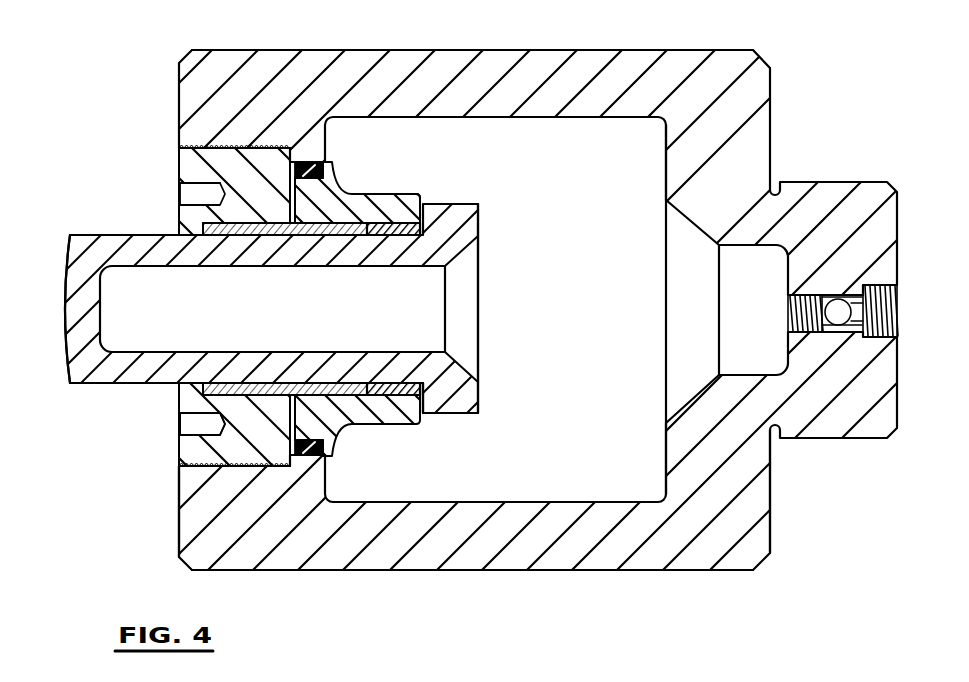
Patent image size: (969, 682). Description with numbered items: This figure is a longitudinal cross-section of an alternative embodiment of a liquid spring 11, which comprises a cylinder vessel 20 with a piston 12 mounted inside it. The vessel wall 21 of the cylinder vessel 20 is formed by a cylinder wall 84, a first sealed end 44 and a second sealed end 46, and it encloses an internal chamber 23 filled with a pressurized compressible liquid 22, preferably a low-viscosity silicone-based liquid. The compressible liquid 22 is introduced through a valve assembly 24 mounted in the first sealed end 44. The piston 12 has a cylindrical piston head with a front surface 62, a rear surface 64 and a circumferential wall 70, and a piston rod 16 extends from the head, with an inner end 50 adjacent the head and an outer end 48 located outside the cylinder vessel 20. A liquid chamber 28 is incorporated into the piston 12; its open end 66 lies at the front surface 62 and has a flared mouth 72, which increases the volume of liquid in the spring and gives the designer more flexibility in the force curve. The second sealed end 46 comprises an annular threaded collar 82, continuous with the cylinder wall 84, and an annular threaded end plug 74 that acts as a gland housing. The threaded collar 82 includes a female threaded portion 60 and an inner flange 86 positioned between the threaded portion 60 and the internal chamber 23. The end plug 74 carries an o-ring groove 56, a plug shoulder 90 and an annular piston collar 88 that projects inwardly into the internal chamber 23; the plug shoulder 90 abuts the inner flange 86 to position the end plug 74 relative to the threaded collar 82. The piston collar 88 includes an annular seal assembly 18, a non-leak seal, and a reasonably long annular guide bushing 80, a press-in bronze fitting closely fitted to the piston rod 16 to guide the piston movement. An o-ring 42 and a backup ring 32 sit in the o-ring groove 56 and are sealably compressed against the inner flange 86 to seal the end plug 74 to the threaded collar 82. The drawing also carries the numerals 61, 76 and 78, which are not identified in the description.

The liquid spring 11 is at (808, 54).
The piston 12 is at (440, 341).
The piston rod 16 is at (82, 234).
The annular seal assembly 18 is at (390, 396).
The cylinder vessel 20 is at (606, 66).
The vessel wall 21 is at (737, 591).
The compressible liquid 22 is at (514, 138).
The internal chamber 23 is at (620, 318).
The valve assembly 24 is at (871, 290).
The liquid chamber 28 is at (142, 335).
The backup ring 32 is at (298, 457).
The o-ring 42 is at (316, 456).
The first sealed end 44 is at (768, 517).
The second sealed end 46 is at (178, 545).
The outer end 48 is at (65, 288).
The inner end 50 is at (357, 396).
The o-ring groove 56 is at (312, 180).
The female threaded portion 60 is at (202, 147).
The bushing socket 61 is at (230, 153).
The front surface 62 is at (481, 403).
The rear surface 64 is at (422, 206).
The open end 66 is at (481, 314).
The circumferential wall 70 is at (455, 415).
The flared mouth 72 is at (471, 357).
The threaded end plug 74 is at (193, 160).
The bushing thread 76 is at (248, 158).
The gland 78 is at (361, 197).
The guide bushing 80 is at (212, 412).
The threaded collar 82 is at (195, 497).
The cylinder wall 84 is at (555, 546).
The inner flange 86 is at (313, 162).
The piston collar 88 is at (395, 196).
The plug shoulder 90 is at (287, 157).